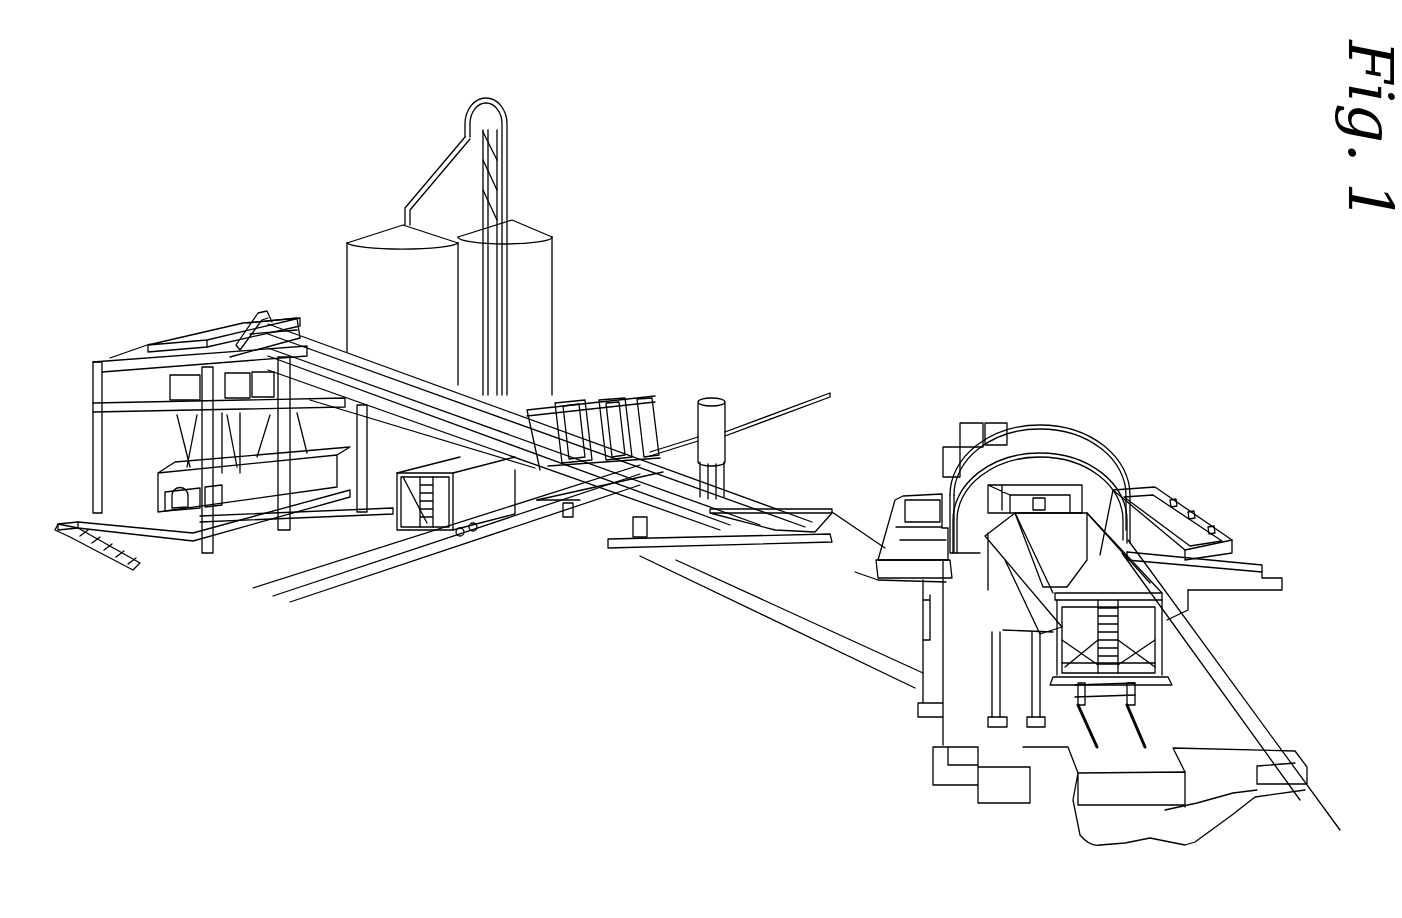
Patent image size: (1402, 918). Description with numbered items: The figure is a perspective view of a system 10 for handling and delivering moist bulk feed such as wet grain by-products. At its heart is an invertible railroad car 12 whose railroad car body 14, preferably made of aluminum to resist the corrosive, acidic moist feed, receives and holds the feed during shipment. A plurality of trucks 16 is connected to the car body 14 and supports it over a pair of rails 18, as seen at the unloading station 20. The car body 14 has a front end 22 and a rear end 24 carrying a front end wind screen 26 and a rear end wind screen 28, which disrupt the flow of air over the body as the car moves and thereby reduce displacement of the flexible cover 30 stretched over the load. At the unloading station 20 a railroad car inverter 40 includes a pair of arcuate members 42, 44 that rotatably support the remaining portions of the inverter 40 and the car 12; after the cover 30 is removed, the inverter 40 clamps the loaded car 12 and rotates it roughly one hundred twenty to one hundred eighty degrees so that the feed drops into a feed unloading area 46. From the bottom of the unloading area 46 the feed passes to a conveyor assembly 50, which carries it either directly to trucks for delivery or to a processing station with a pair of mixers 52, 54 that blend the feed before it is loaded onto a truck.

The system for handling and delivering moist bulk feed 10 is at (983, 326).
The invertible railroad car 12 is at (1165, 647).
The railroad car body 14 is at (1143, 570).
The trucks 16 is at (1130, 705).
The rails 18 is at (1147, 733).
The unloading station 20 is at (1130, 480).
The front end 22 is at (1113, 490).
The rear end 24 is at (1167, 622).
The front end wind screen 26 is at (583, 432).
The rear end wind screen 28 is at (427, 477).
The flexible cover 30 is at (470, 467).
The railroad car inverter 40 is at (918, 480).
The arcuate member 42 is at (1033, 435).
The arcuate member 44 is at (1080, 462).
The feed unloading area 46 is at (910, 679).
The conveyor assembly 50 is at (658, 557).
The mixer 52 is at (232, 510).
The mixer 54 is at (310, 500).